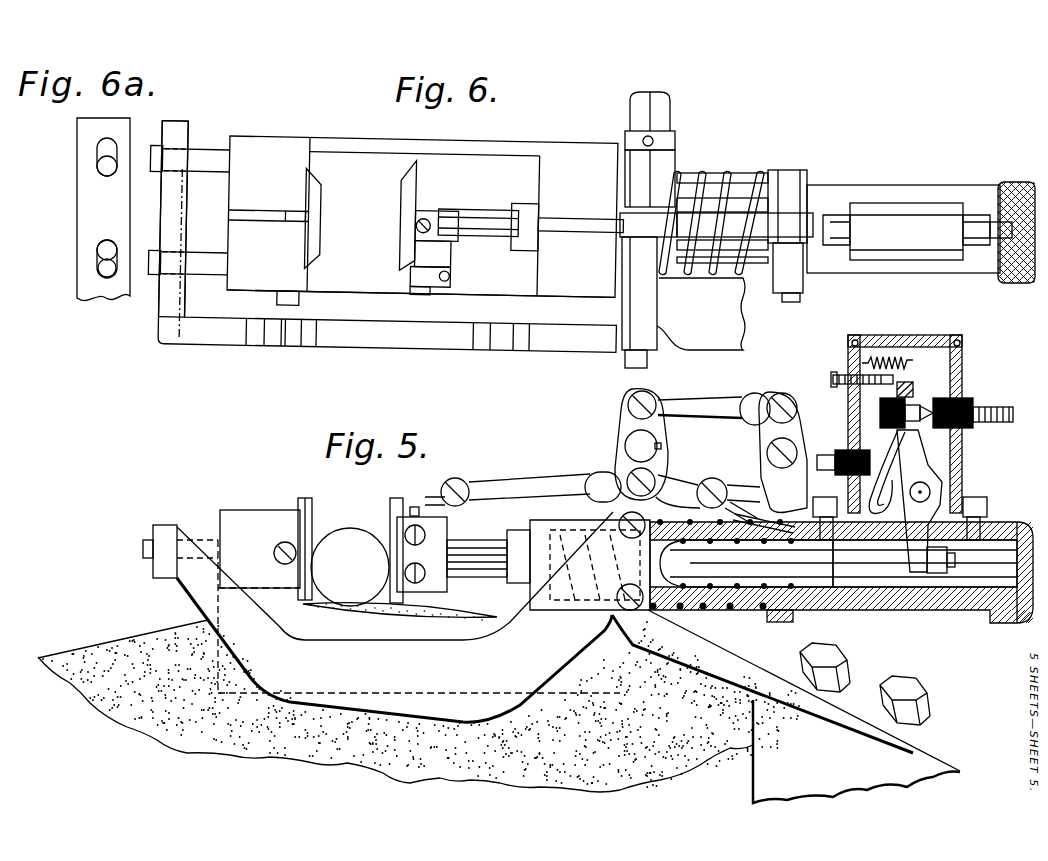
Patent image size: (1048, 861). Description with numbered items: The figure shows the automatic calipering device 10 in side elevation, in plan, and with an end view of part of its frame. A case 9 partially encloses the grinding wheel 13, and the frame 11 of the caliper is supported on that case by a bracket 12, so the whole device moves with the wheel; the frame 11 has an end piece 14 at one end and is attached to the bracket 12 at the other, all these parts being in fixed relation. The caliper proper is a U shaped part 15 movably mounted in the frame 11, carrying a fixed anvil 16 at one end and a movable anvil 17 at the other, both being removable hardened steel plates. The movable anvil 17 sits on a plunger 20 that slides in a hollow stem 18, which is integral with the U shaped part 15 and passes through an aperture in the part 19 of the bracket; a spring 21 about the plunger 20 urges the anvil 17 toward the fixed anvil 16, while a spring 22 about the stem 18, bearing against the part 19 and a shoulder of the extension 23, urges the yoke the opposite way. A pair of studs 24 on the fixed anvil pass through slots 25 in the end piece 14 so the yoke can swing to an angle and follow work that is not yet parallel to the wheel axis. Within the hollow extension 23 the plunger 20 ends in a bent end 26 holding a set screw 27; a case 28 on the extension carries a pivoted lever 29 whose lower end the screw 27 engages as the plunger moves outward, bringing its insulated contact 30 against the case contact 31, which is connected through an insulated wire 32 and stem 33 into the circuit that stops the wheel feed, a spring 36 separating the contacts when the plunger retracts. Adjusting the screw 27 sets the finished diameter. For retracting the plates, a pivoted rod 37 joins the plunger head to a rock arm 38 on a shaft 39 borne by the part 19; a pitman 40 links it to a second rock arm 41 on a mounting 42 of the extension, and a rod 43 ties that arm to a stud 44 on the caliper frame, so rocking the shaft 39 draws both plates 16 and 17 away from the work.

In FIG. 5, the case 9 is at (856, 751).
In FIG. 6, the calipering device 10 is at (353, 165).
In FIG. 5, the calipering device 10 is at (332, 515).
In FIG. 6, the frame 11 is at (412, 332).
In FIG. 5, the frame 11 is at (398, 617).
In FIG. 6, the bracket 12 is at (701, 314).
In FIG. 5, the bracket 12 is at (786, 690).
In FIG. 5, the grinding wheel 13 is at (593, 760).
In FIG. 6A, the end piece 14 is at (103, 209).
In FIG. 6, the end piece 14 is at (178, 216).
In FIG. 6, the U shaped part 15 is at (340, 290).
In FIG. 5, the U shaped part 15 is at (400, 622).
In FIG. 6, the fixed anvil 16 is at (312, 215).
In FIG. 5, the fixed anvil 16 is at (305, 500).
In FIG. 6, the movable anvil 17 is at (408, 204).
In FIG. 5, the movable anvil 17 is at (396, 513).
In FIG. 5, the hollow stem 18 is at (751, 604).
In FIG. 6, the part of bracket 19 is at (648, 249).
In FIG. 6, the plunger 20 is at (488, 207).
In FIG. 5, the plunger 20 is at (495, 529).
In FIG. 5, the spring 21 is at (746, 587).
In FIG. 6, the spring 22 is at (707, 200).
In FIG. 5, the spring 22 is at (733, 485).
In FIG. 6, the extension 23 is at (928, 196).
In FIG. 5, the extension 23 is at (893, 606).
In FIG. 6A, the studs 24 is at (110, 157).
In FIG. 6, the studs 24 is at (205, 152).
In FIG. 5, the studs 24 is at (203, 545).
In FIG. 6A, the slots 25 is at (105, 280).
In FIG. 5, the bent end 26 is at (940, 570).
In FIG. 6, the set screw 27 is at (1016, 232).
In FIG. 5, the set screw 27 is at (925, 567).
In FIG. 5, the case 28 is at (963, 458).
In FIG. 5, the lever 29 is at (919, 477).
In FIG. 5, the contact 30 is at (933, 410).
In FIG. 5, the contact 31 is at (954, 397).
In FIG. 5, the insulated wire 32 is at (882, 432).
In FIG. 5, the stem 33 is at (827, 450).
In FIG. 5, the spring 36 is at (884, 360).
In FIG. 6, the pivoted rod 37 is at (557, 219).
In FIG. 5, the pivoted rod 37 is at (518, 483).
In FIG. 5, the rock arm 38 is at (620, 420).
In FIG. 6, the shaft 39 is at (665, 109).
In FIG. 5, the shaft 39 is at (640, 446).
In FIG. 6, the pitman 40 is at (730, 227).
In FIG. 5, the pitman 40 is at (704, 402).
In FIG. 5, the rock arm 41 is at (764, 393).
In FIG. 5, the mounting 42 is at (783, 452).
In FIG. 5, the rod 43 is at (747, 492).
In FIG. 5, the stud 44 is at (692, 488).